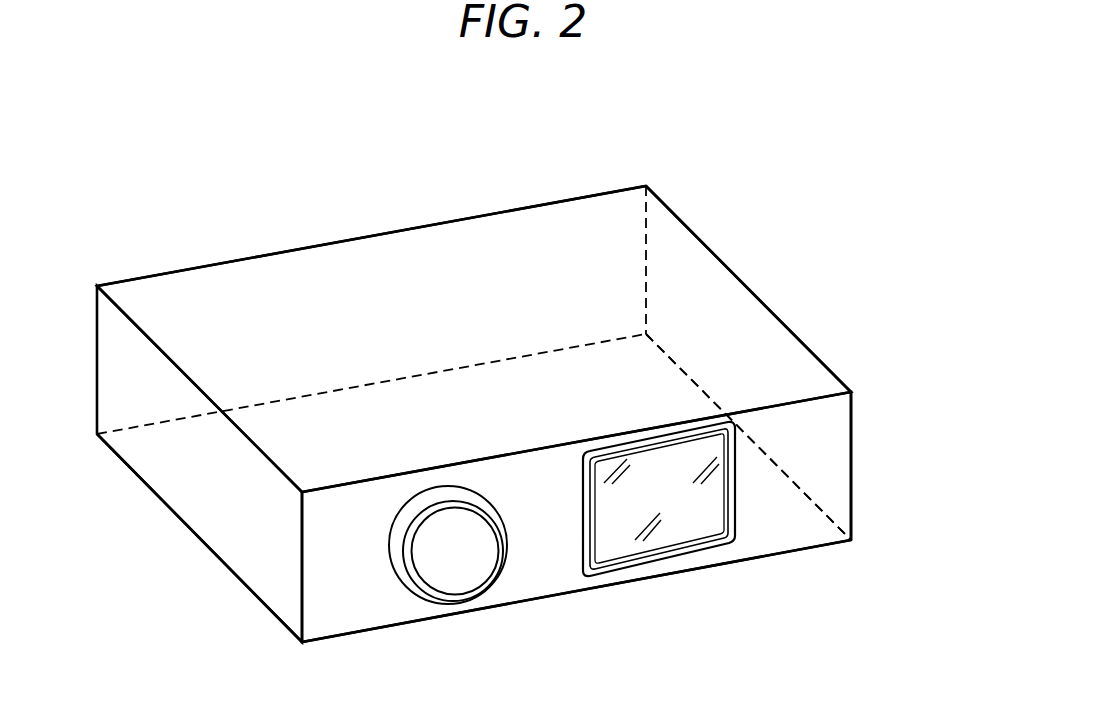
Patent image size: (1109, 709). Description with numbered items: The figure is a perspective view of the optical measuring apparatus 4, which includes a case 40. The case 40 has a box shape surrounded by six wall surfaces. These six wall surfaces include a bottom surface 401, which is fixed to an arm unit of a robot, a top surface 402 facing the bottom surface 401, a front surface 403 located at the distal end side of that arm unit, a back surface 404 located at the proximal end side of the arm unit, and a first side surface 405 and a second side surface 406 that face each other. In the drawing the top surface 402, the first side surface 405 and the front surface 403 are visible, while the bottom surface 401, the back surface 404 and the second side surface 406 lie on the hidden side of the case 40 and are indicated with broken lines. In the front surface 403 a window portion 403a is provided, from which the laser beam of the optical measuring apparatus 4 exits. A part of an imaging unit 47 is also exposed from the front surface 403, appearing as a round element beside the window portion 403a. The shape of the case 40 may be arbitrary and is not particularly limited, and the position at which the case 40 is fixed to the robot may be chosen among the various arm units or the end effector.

The optical measuring apparatus 4 is at (779, 234).
The case 40 is at (772, 296).
The bottom surface 401 is at (253, 563).
The top surface 402 is at (673, 243).
The front surface 403 is at (557, 573).
The window portion 403a is at (708, 492).
The back surface 404 is at (512, 258).
The first side surface 405 is at (177, 469).
The second side surface 406 is at (803, 355).
The imaging unit 47 is at (460, 580).